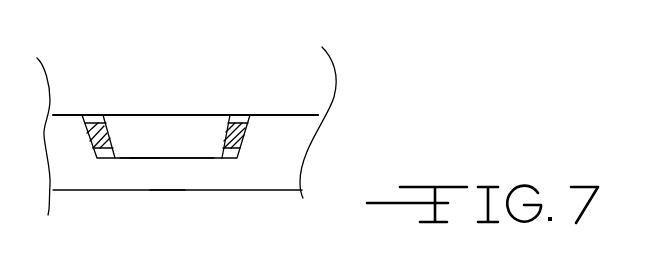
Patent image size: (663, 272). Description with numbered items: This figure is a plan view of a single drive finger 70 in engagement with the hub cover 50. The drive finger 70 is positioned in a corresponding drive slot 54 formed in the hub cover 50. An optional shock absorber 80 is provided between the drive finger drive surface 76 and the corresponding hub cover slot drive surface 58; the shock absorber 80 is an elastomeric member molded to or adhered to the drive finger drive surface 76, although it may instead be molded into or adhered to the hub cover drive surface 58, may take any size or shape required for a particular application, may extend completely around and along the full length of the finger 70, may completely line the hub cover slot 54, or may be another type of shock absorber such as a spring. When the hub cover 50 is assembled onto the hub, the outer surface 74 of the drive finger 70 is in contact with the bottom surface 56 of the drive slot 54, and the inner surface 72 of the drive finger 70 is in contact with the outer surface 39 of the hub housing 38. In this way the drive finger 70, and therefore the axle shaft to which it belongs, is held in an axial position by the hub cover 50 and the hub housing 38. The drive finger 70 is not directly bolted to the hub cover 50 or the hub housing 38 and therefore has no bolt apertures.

The hub housing 38 is at (310, 78).
The outer surface of the hub housing 39 is at (310, 130).
The hub cover 50 is at (287, 160).
The drive slot 54 is at (145, 159).
The bottom surface of the drive slot 56 is at (187, 156).
The hub cover slot drive surface 58 is at (248, 117).
The drive finger 70 is at (152, 135).
The inner surface of the drive finger 72 is at (144, 115).
The outer surface of the drive finger 74 is at (167, 162).
The drive finger drive surface 76 is at (118, 148).
The shock absorber 80 is at (247, 130).